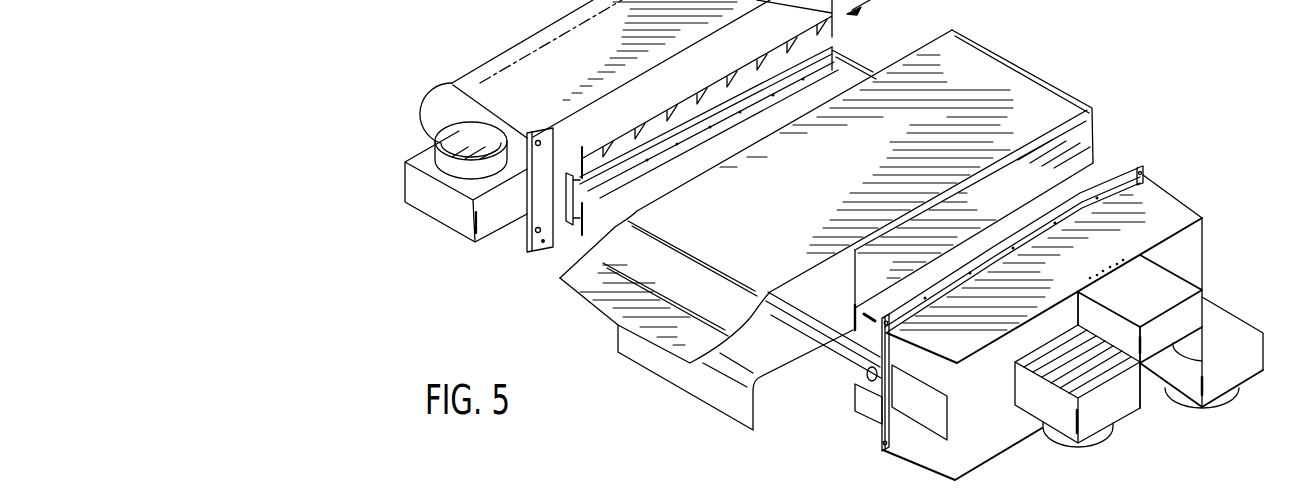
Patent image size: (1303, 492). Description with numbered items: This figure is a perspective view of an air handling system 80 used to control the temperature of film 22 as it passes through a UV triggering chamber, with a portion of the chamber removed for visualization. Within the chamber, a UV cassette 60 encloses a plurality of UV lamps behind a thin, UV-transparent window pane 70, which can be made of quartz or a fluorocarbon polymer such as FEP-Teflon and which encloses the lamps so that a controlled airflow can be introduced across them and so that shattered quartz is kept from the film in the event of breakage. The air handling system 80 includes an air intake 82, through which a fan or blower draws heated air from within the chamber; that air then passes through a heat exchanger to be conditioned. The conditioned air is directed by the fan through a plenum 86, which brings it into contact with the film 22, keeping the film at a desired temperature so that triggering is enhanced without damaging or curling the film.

The film 22 is at (1096, 134).
The UV cassette 60 is at (848, 71).
The window pane 70 is at (742, 158).
The air handling system 80 is at (1209, 237).
The air intake 82 is at (850, 396).
The plenum 86 is at (566, 247).